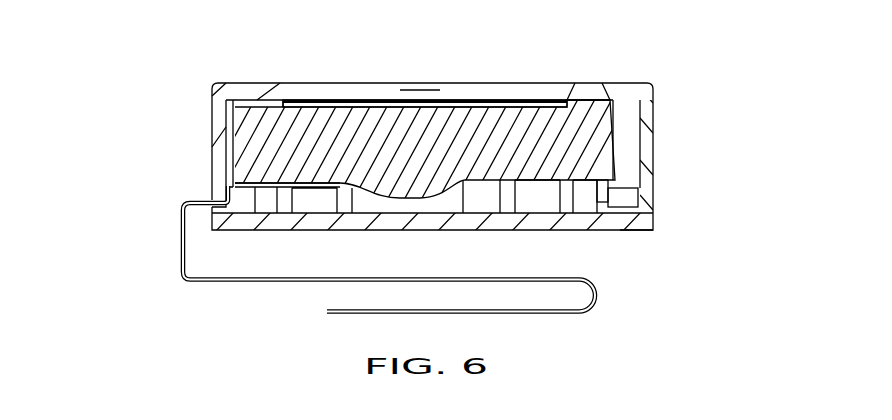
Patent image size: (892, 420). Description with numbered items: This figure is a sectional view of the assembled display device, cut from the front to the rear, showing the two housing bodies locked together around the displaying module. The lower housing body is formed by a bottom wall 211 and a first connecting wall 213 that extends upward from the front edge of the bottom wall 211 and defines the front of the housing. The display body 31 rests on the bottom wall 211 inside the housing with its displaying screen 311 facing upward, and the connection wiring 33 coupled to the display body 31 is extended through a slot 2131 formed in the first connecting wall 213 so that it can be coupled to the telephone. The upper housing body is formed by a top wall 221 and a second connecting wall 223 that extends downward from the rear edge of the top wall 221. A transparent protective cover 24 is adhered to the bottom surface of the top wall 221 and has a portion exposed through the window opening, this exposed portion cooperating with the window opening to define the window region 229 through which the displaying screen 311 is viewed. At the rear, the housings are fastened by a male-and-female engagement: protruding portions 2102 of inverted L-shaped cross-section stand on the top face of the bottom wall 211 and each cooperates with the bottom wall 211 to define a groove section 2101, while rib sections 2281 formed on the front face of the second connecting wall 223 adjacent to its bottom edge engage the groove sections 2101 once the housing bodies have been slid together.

The transparent protective cover 24 is at (289, 98).
The displaying screen 311 is at (326, 106).
The display body 31 is at (361, 118).
The window region 229 is at (423, 80).
The top wall 221 is at (587, 95).
The second connecting wall 223 is at (645, 112).
The first connecting wall 213 is at (212, 120).
The protruding portion 2102 is at (633, 192).
The groove section 2101 is at (644, 209).
The bottom wall 211 is at (583, 226).
The slot 2131 is at (214, 208).
The connection wiring 33 is at (183, 282).
The rib section 2281 is at (642, 243).